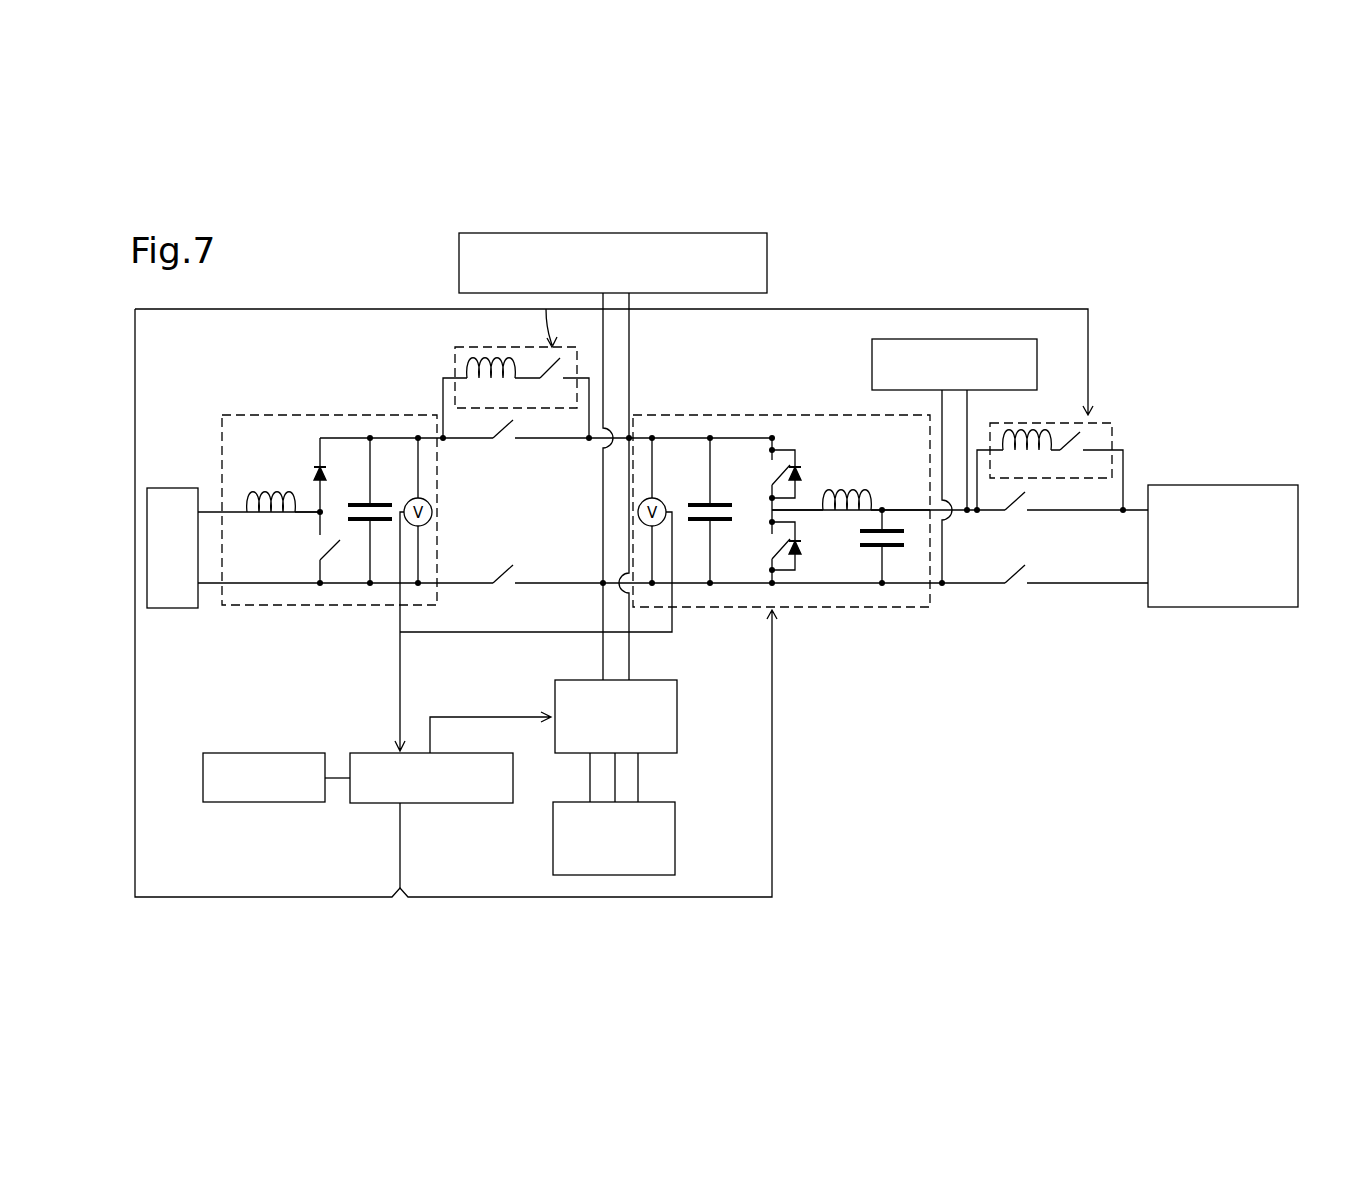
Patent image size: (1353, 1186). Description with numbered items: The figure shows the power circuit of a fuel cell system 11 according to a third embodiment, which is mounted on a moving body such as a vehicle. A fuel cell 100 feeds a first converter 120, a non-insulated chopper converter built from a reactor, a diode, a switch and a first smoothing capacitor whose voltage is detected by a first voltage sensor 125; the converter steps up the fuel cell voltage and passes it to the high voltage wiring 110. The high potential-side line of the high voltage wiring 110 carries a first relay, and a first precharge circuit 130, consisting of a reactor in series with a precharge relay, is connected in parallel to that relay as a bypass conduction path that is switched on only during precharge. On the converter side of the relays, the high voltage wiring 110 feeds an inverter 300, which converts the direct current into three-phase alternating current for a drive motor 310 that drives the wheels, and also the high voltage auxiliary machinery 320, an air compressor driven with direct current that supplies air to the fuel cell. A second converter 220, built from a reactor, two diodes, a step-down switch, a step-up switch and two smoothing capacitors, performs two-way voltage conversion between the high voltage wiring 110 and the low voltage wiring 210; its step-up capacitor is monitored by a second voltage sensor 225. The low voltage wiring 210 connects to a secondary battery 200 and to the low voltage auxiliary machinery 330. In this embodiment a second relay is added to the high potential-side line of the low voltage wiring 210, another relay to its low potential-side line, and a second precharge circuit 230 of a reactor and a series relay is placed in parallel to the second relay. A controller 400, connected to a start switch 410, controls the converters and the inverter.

The fuel cell system 11 is at (1137, 319).
The fuel cell 100 is at (165, 488).
The high voltage wiring 110 is at (578, 442).
The first converter 120 is at (378, 415).
The first voltage sensor 125 is at (418, 498).
The first precharge circuit 130 is at (500, 380).
The secondary battery 200 is at (1164, 485).
The low voltage wiring 210 is at (1040, 513).
The second converter 220 is at (676, 415).
The second voltage sensor 225 is at (653, 498).
The second precharge circuit 230 is at (1072, 447).
The inverter 300 is at (675, 680).
The drive motor 310 is at (673, 802).
The high voltage auxiliary machinery 320 is at (655, 233).
The low voltage auxiliary machinery 330 is at (963, 339).
The controller 400 is at (477, 753).
The start switch 410 is at (302, 753).